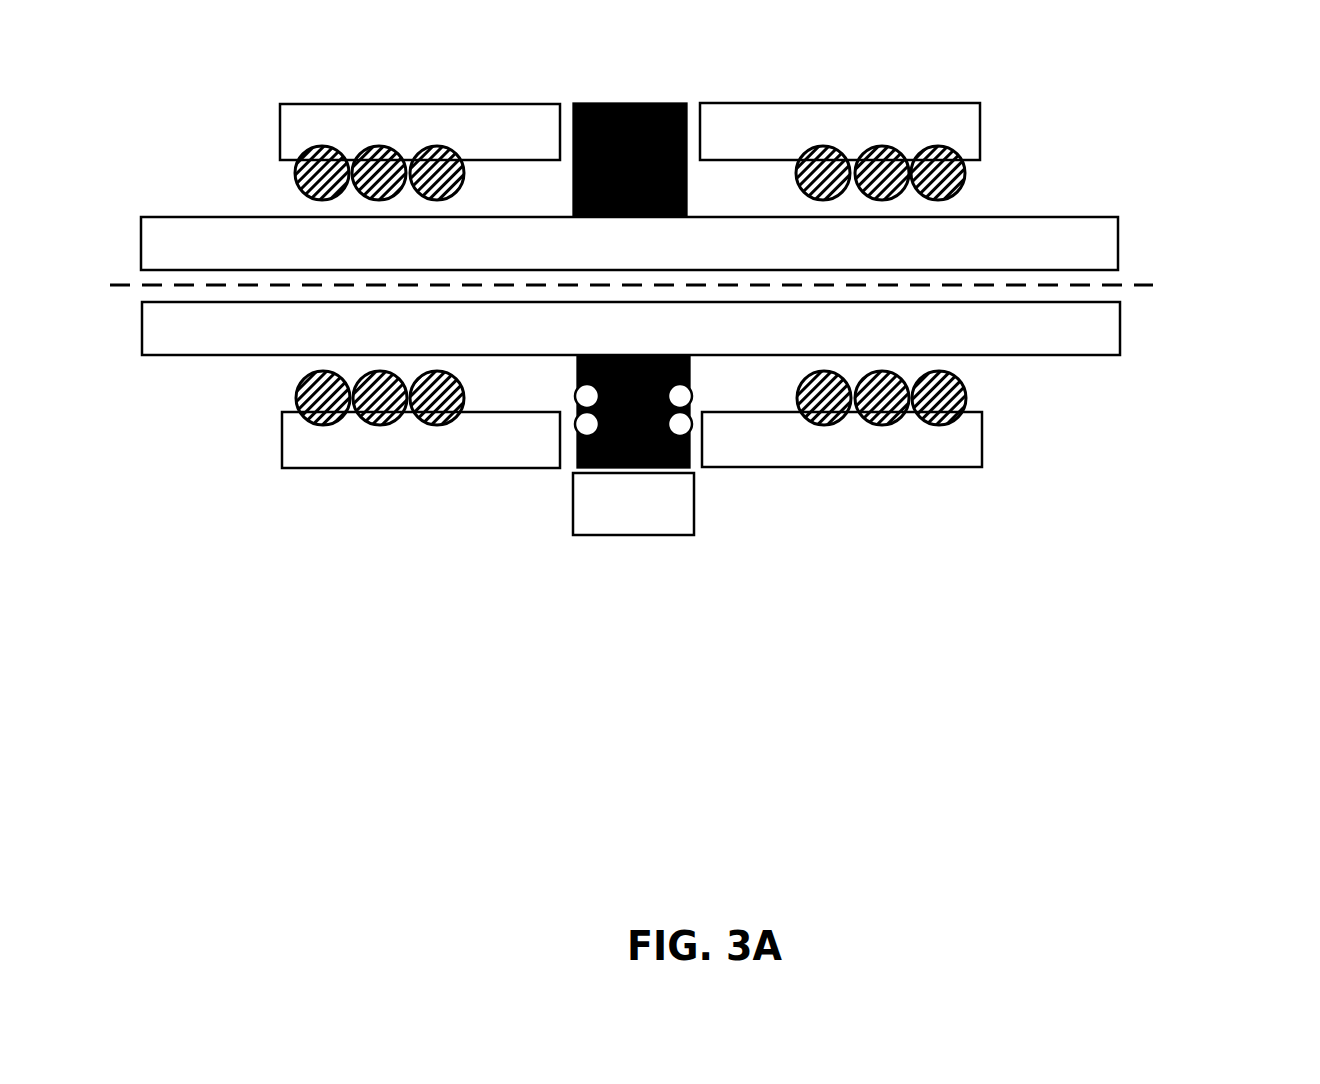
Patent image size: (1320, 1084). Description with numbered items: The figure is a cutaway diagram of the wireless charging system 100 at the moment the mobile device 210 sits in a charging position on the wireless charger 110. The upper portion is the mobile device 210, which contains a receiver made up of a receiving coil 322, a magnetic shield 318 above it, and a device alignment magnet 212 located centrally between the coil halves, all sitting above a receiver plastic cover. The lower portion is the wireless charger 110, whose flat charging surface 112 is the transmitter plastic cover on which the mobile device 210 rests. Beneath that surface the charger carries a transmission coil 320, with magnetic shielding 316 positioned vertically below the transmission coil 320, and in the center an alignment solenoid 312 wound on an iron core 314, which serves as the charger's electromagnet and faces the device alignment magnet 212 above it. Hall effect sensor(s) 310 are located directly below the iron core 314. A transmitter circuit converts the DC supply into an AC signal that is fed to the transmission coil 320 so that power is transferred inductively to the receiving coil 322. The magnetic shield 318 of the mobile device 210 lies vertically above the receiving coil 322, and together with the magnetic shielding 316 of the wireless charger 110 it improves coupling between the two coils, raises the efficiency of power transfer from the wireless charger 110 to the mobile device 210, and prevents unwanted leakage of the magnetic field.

The system 100 is at (186, 115).
The wireless charger 110 is at (1197, 302).
The flat charging surface 112 is at (1083, 302).
The mobile device 210 is at (1190, 82).
The device alignment magnet 212 is at (630, 103).
The Hall effect sensor(s) 310 is at (697, 493).
The alignment solenoid 312 is at (692, 393).
The iron core 314 is at (575, 365).
The magnetic shielding 316 is at (350, 470).
The magnetic shield 318 is at (297, 104).
The transmission coil 320 is at (273, 375).
The receiving coil 322 is at (273, 152).